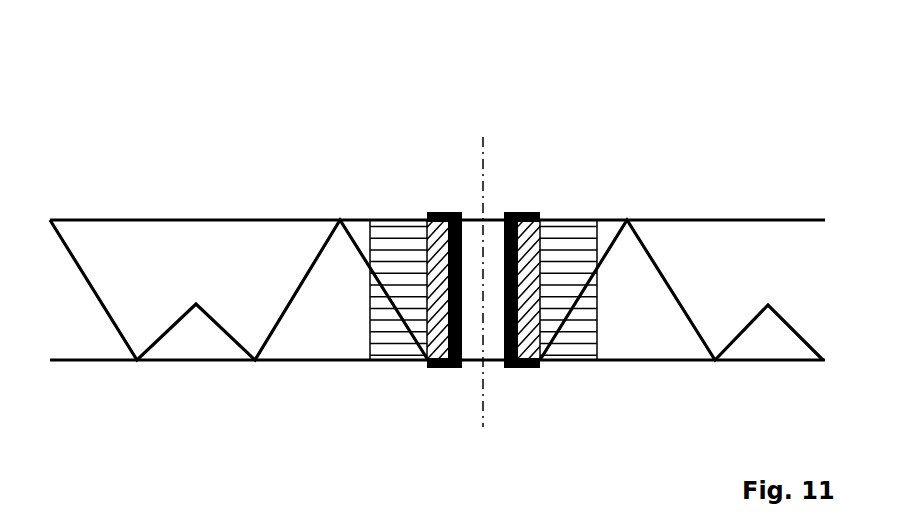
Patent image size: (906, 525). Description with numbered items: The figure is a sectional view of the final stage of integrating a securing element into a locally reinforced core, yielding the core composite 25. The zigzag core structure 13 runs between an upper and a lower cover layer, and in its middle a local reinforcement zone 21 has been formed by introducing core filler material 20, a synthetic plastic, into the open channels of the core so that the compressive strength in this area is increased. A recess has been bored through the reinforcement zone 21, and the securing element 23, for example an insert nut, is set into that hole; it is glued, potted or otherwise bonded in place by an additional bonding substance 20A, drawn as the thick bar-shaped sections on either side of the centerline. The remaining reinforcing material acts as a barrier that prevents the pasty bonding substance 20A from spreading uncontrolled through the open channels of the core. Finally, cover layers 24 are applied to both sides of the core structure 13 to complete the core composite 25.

The core structure 13 is at (796, 322).
The core filler material 20 is at (397, 235).
The additional bonding substance 20A is at (430, 368).
The local reinforcement zone 21 is at (573, 197).
The securing element 23 is at (525, 212).
The cover layers 24 is at (246, 220).
The core composite 25 is at (661, 100).